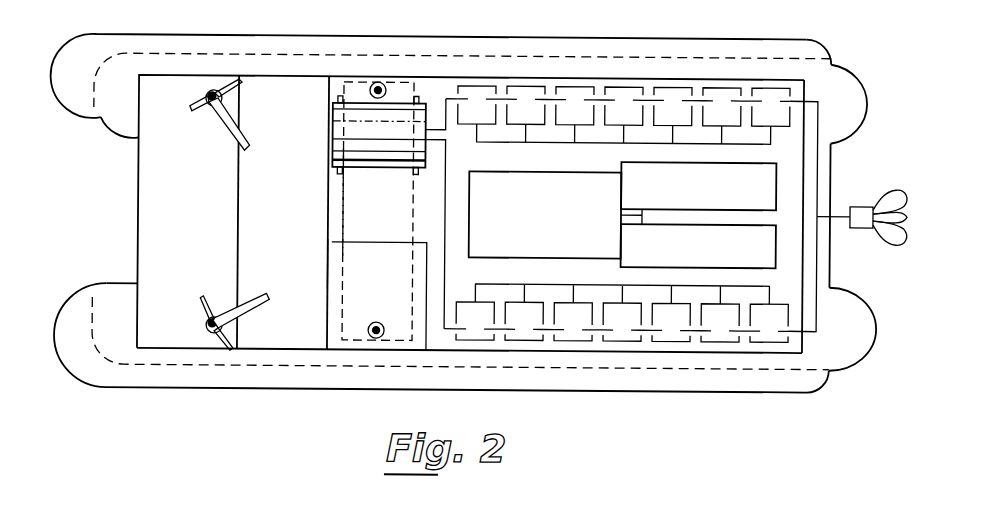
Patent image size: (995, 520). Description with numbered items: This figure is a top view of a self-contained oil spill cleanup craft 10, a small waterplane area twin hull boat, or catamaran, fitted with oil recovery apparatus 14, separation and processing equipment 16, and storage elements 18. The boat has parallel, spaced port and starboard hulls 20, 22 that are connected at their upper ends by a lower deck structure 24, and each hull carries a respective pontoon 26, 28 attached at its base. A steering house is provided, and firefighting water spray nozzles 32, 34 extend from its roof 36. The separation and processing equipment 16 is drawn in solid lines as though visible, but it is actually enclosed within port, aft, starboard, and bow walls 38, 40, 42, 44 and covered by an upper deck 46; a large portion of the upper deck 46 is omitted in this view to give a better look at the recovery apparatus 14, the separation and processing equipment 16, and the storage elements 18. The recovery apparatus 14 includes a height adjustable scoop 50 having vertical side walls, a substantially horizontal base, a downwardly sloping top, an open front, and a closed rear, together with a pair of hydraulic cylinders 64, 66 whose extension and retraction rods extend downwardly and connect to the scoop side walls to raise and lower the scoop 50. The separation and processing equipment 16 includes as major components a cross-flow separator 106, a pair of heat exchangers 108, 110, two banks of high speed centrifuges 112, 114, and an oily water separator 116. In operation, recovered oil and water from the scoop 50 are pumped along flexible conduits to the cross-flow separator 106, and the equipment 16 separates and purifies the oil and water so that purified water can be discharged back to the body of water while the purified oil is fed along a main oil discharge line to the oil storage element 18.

The self-contained oil spill cleanup craft 10 is at (558, 38).
The oil recovery apparatus 14 is at (366, 190).
The separation and processing equipment 16 is at (498, 259).
The storage elements 18 is at (884, 190).
The port hull 20 is at (64, 311).
The starboard hull 22 is at (122, 37).
The lower deck structure 24 is at (730, 37).
The pontoon 26 is at (130, 284).
The pontoon 28 is at (112, 135).
The firefighting water spray nozzle 32 is at (250, 309).
The firefighting water spray nozzle 34 is at (242, 141).
The roof 36 is at (169, 223).
The port wall 38 is at (603, 352).
The aft wall 40 is at (806, 247).
The starboard wall 42 is at (461, 77).
The bow wall 44 is at (328, 266).
The upper deck 46 is at (265, 108).
The height adjustable scoop 50 is at (343, 209).
The hydraulic cylinder 64 is at (374, 323).
The hydraulic cylinder 66 is at (378, 83).
The cross-flow separator 106 is at (544, 206).
The heat exchanger 108 is at (681, 254).
The heat exchanger 110 is at (681, 194).
The bank of high speed centrifuges 112 is at (471, 342).
The bank of high speed centrifuges 114 is at (622, 86).
The oily water separator 116 is at (349, 146).